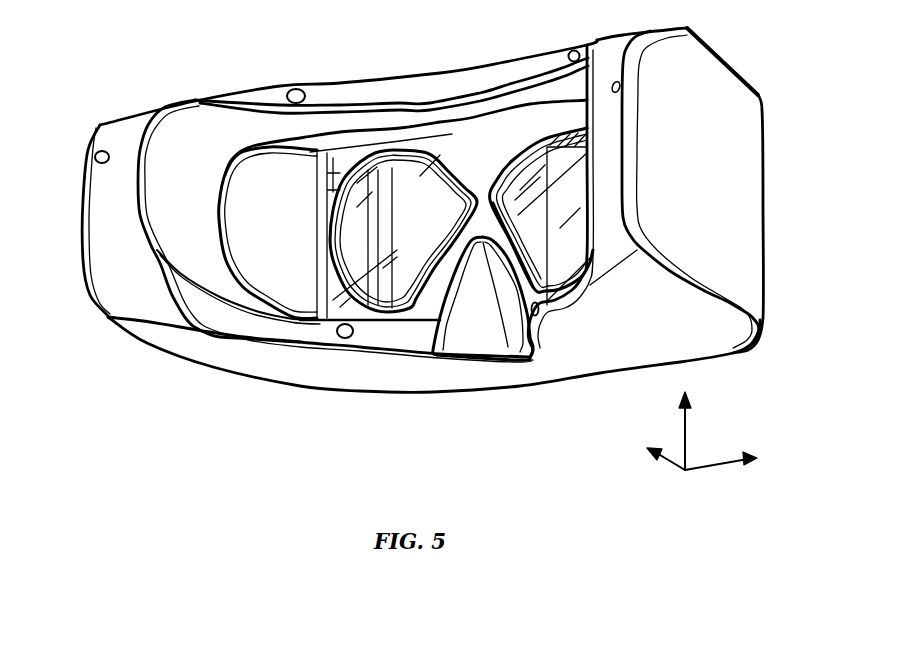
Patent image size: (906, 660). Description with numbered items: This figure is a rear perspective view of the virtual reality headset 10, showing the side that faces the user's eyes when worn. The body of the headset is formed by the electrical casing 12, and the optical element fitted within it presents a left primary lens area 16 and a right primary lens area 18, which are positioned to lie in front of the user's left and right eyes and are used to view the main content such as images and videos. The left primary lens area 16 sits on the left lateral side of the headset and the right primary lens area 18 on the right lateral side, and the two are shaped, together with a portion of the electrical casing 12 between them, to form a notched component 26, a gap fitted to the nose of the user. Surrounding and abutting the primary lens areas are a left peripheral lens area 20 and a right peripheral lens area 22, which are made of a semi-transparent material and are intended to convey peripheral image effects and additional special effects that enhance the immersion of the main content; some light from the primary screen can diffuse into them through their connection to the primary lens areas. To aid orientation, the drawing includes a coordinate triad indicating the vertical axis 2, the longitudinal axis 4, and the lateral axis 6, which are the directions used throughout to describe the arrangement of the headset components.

The virtual reality headset 10 is at (223, 33).
The electrical casing 12 is at (84, 215).
The left primary lens area 16 is at (412, 210).
The right primary lens area 18 is at (552, 217).
The left peripheral lens area 20 is at (277, 230).
The right peripheral lens area 22 is at (577, 122).
The notched component 26 is at (492, 328).
The vertical axis 2 is at (687, 423).
The longitudinal axis 4 is at (665, 467).
The lateral axis 6 is at (717, 468).